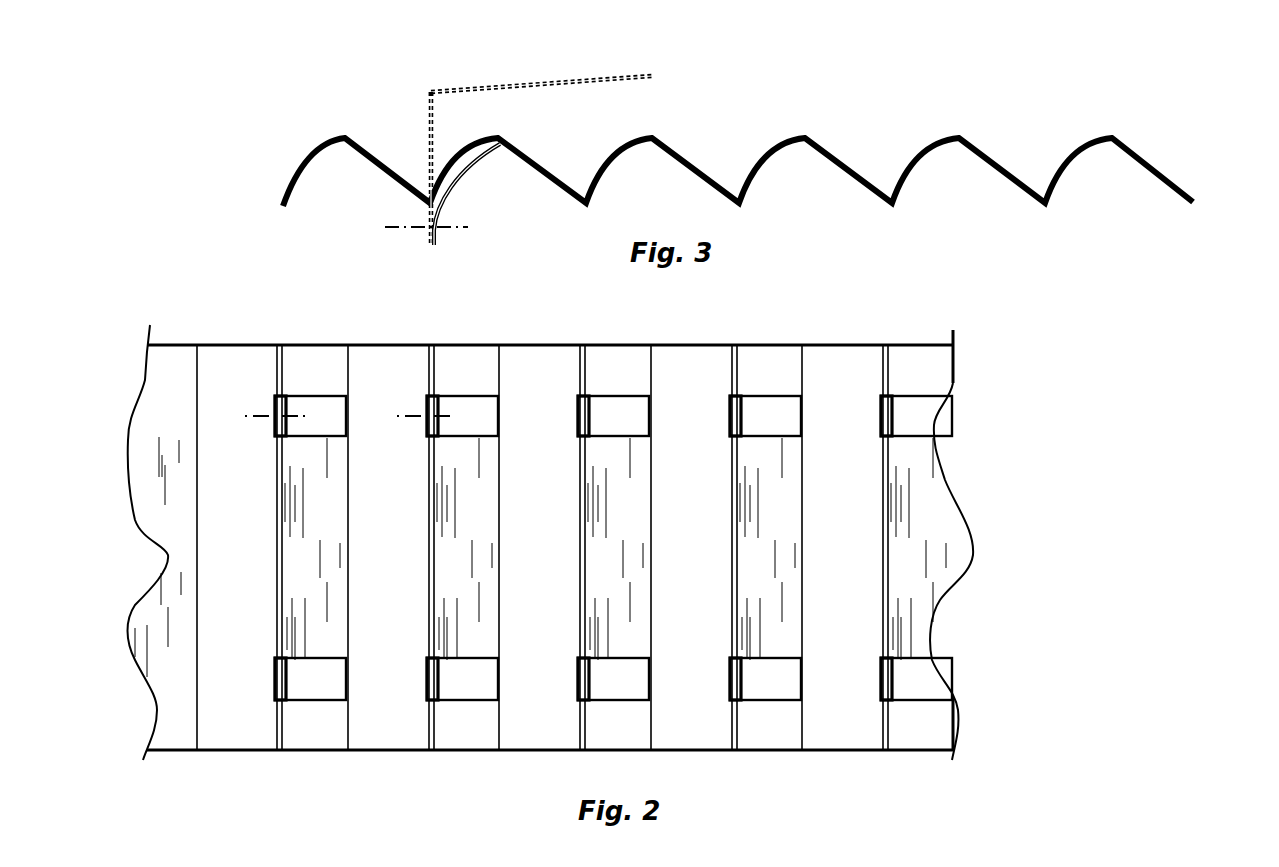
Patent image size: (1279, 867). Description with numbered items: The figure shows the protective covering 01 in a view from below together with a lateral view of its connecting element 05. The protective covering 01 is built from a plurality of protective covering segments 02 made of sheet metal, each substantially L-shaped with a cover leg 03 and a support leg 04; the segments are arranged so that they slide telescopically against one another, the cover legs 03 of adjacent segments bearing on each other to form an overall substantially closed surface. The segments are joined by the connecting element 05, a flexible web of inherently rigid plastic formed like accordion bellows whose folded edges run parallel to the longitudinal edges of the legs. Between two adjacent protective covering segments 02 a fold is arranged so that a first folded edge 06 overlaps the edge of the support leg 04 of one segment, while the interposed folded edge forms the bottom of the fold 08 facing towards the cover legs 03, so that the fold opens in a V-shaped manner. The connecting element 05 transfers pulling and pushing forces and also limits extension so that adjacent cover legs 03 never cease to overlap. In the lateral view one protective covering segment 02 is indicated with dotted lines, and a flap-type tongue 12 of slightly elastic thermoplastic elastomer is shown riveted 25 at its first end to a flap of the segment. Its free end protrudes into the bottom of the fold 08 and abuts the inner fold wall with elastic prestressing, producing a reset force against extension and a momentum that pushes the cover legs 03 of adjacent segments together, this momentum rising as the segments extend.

In FIG. 2, the protective covering 01 is at (1038, 688).
In FIG. 3, the protective covering segment 02 is at (409, 99).
In FIG. 3, the cover leg 03 is at (486, 92).
In FIG. 3, the support leg 04 is at (428, 144).
In FIG. 3, the connecting element 05 is at (1194, 136).
In FIG. 2, the first folded edge 06 is at (280, 737).
In FIG. 2, the bottom of the fold 08 is at (348, 724).
In FIG. 3, the flap-type tongue 12 is at (462, 163).
In FIG. 3, the rivet 25 is at (385, 228).
In FIG. 2, the rivet 25 is at (410, 415).